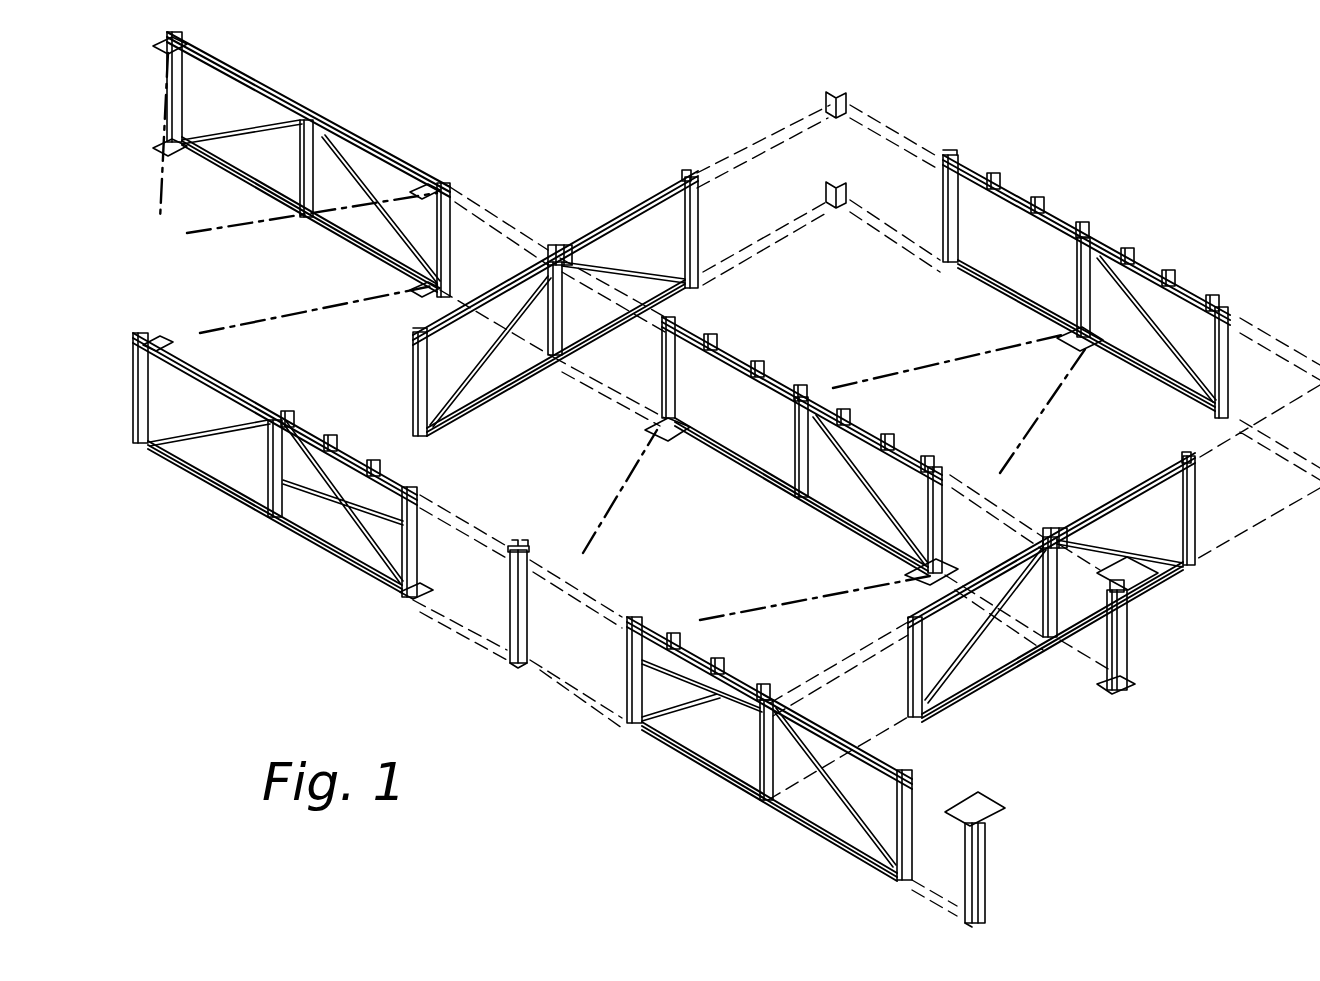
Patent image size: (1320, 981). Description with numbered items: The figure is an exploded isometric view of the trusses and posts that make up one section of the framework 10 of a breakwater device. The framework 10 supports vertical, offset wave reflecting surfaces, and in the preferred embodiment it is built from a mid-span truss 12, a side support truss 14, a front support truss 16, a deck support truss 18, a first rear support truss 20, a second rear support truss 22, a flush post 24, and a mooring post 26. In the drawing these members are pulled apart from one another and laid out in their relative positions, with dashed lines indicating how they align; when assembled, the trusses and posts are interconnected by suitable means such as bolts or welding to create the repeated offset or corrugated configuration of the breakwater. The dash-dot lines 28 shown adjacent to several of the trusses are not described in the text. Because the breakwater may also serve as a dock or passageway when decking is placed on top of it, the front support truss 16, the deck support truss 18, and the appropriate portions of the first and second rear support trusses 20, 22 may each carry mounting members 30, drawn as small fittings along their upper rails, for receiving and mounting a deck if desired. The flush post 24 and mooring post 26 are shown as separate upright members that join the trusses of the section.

The framework 10 is at (557, 117).
The mid-span truss 12 is at (397, 166).
The side support truss 14 is at (633, 213).
The front support truss 16 is at (1195, 292).
The deck support truss 18 is at (867, 429).
The first rear support truss 20 is at (223, 379).
The second rear support truss 22 is at (906, 773).
The flush post 24 is at (515, 651).
The mooring post 26 is at (1120, 653).
The hinge axis lines 28 is at (163, 173).
The mounting members 30 is at (1040, 201).